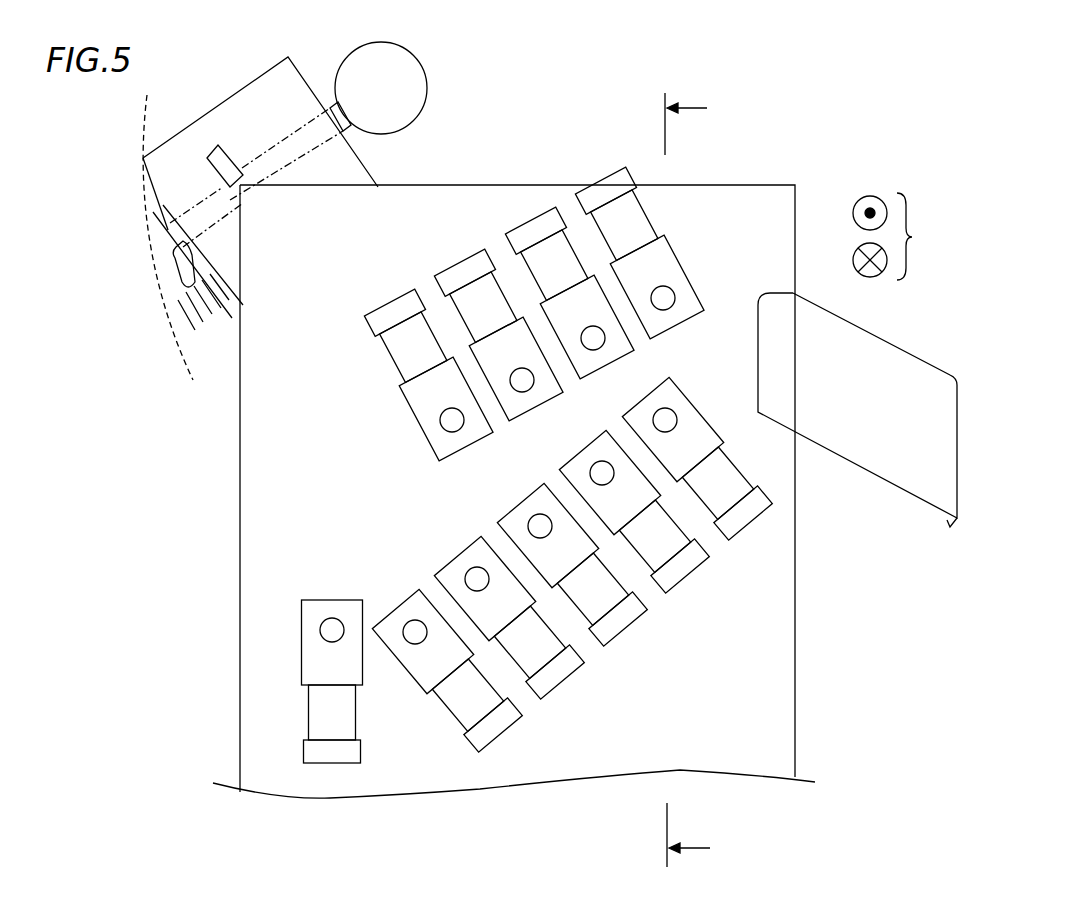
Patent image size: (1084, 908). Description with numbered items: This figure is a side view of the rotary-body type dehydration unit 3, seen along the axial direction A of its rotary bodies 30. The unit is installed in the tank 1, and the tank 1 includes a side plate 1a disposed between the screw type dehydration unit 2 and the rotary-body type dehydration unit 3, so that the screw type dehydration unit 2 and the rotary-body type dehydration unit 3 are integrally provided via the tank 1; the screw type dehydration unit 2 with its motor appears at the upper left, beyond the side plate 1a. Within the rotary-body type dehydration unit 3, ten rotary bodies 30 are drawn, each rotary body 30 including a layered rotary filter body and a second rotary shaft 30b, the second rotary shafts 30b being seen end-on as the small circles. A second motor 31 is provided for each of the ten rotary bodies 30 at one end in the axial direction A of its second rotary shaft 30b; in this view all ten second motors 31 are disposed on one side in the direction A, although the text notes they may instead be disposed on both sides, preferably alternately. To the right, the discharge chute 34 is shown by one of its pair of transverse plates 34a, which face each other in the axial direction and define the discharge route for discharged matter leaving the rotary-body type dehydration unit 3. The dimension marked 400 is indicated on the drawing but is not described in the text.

The tank 1 is at (216, 488).
The side plate 1a is at (242, 652).
The screw type dehydration unit 2 is at (201, 102).
The rotary-body type dehydration unit 3 is at (764, 157).
The rotary body 30 is at (523, 467).
The second rotary shaft 30b is at (456, 424).
The second motor 31 is at (386, 303).
The discharge chute 34 is at (857, 429).
The transverse plate 34a is at (912, 477).
The reference width line 400 is at (705, 480).
The direction A is at (893, 236).